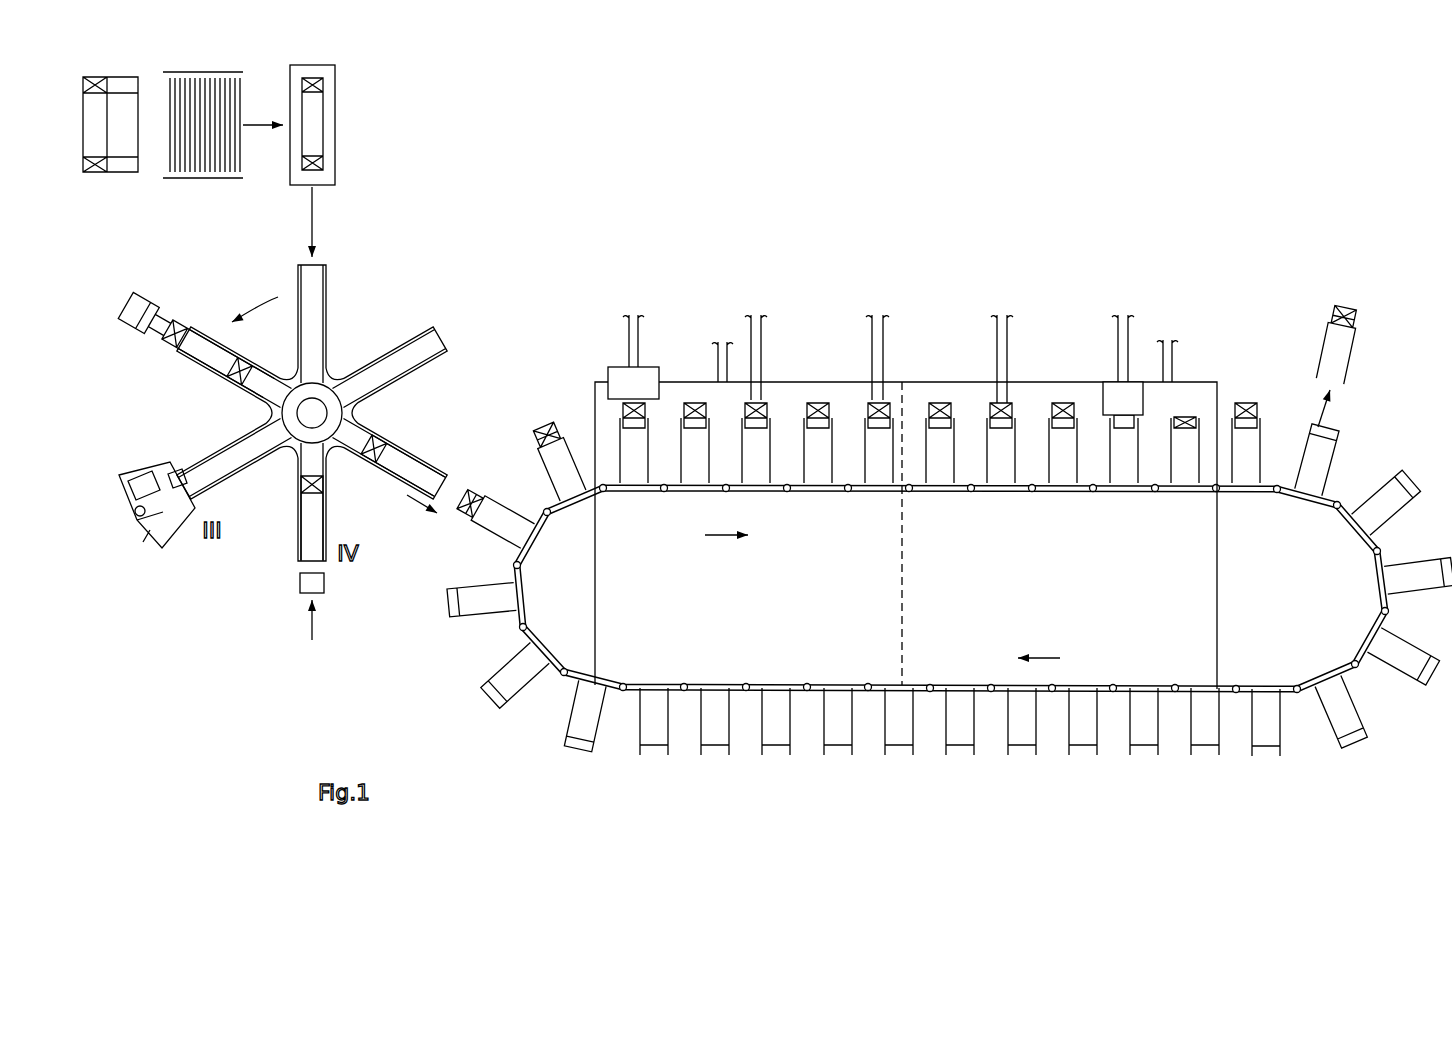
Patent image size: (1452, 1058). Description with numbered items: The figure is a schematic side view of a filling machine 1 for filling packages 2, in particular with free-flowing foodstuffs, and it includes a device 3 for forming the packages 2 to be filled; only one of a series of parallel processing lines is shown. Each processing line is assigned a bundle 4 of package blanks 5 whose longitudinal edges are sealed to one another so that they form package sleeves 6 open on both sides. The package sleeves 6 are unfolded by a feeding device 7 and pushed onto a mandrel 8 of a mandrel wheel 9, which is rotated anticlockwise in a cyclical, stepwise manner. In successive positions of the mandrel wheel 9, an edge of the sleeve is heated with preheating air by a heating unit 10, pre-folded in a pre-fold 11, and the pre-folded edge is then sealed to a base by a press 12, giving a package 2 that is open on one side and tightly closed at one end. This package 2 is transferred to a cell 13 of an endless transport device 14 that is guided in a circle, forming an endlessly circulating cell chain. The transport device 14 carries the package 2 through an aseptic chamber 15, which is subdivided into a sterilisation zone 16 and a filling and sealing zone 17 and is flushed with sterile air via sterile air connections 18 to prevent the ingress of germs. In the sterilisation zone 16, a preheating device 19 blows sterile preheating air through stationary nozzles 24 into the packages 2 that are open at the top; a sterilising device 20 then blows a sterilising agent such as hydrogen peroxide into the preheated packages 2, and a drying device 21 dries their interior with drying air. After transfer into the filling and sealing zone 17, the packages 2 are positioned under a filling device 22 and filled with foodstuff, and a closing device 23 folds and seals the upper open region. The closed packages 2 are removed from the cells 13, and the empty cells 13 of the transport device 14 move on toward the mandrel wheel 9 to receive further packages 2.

The filling machine 1 is at (612, 145).
The package 2 is at (392, 463).
The device for forming the packages 3 is at (222, 732).
The bundle of package blanks 4 is at (185, 190).
The package blank 5 is at (120, 140).
The package sleeve 6 is at (312, 135).
The feeding device 7 is at (335, 98).
The mandrel 8 is at (313, 318).
The mandrel wheel 9 is at (228, 583).
The heating unit 10 is at (128, 312).
The pre-fold 11 is at (153, 533).
The press 12 is at (315, 583).
The cell 13 is at (540, 467).
The transport device 14 is at (818, 492).
The aseptic chamber 15 is at (670, 287).
The sterilisation zone 16 is at (789, 395).
The filling and sealing zone 17 is at (1032, 420).
The sterile air connection 18 is at (719, 340).
The preheating device 19 is at (613, 367).
The sterilising device 20 is at (756, 313).
The drying device 21 is at (878, 313).
The filling device 22 is at (1001, 313).
The closing device 23 is at (1122, 313).
The nozzle 24 is at (1000, 472).